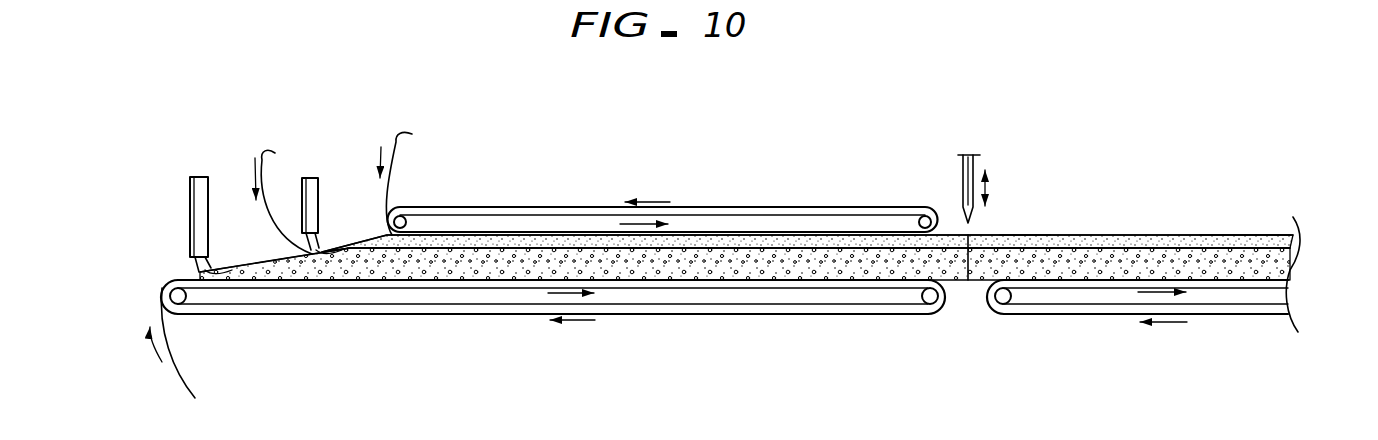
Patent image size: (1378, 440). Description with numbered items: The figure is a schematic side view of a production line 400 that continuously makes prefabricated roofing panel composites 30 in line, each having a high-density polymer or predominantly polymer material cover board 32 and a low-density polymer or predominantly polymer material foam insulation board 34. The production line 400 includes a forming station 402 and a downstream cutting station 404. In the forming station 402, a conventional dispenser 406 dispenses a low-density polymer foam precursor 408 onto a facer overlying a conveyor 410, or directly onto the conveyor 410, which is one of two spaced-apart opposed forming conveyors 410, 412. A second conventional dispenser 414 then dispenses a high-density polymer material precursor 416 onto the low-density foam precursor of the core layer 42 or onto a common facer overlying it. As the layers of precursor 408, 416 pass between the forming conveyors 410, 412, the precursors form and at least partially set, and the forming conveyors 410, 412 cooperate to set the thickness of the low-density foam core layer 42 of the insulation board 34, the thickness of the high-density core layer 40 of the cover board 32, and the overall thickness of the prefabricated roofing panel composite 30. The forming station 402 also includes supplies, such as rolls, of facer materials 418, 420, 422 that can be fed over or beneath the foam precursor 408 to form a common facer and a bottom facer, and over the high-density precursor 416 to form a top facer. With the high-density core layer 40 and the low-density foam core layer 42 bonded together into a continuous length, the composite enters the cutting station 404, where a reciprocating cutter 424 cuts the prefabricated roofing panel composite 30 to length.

The production line 400 is at (1010, 86).
The forming station 402 is at (663, 174).
The cutting station 404 is at (1009, 168).
The dispenser 406 is at (190, 176).
The low-density polymer or predominantly polymer material foam precursor 408 is at (235, 268).
The conveyor 410 is at (499, 318).
The forming conveyor 412 is at (588, 204).
The dispenser 414 is at (323, 200).
The high-density polymer or predominantly polymer material precursor 416 is at (340, 252).
The facer material supply 418 is at (207, 380).
The facer material supply 420 is at (268, 177).
The facer material supply 422 is at (392, 181).
The reciprocating cutter 424 is at (962, 182).
The high-density polymer or predominantly polymer material core layer 40 is at (762, 246).
The low-density polymer or predominantly polymer material foam core layer 42 is at (762, 265).
The cover board 32 is at (1027, 231).
The foam insulation board 34 is at (978, 284).
The prefabricated roofing panel composite 30 is at (1253, 218).